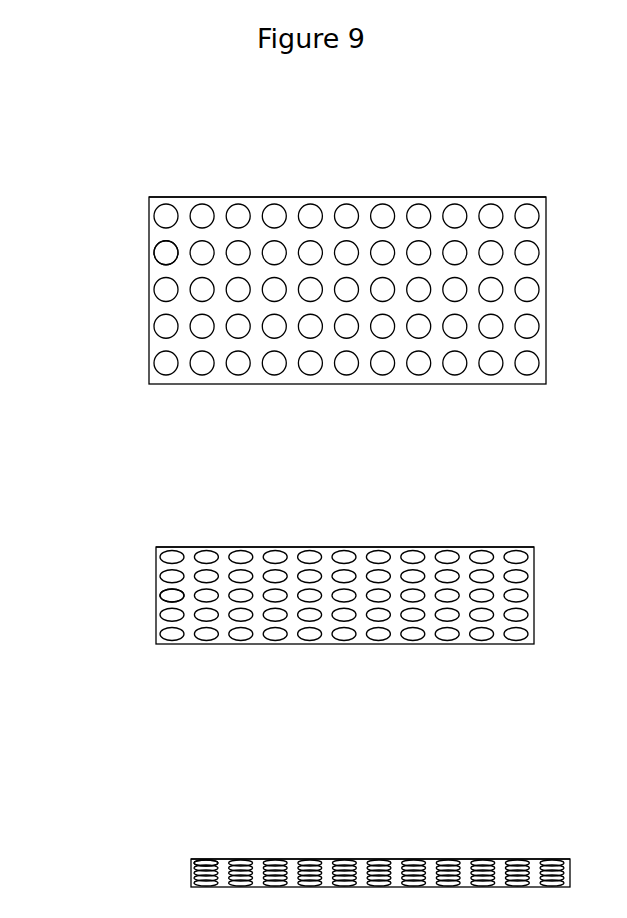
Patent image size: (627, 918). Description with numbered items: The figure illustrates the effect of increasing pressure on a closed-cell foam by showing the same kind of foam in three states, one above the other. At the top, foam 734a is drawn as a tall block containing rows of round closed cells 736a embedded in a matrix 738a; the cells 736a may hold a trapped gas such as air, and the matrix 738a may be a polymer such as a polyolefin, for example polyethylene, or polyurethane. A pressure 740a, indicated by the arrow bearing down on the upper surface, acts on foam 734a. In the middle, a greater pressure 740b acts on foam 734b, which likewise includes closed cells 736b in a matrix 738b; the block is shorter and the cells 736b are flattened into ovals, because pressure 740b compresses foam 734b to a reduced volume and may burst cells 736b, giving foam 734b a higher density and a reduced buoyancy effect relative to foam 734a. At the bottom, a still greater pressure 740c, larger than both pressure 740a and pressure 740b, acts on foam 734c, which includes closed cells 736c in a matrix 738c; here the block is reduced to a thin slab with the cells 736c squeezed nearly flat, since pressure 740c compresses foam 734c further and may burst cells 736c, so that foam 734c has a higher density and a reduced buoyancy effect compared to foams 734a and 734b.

The foam 734a is at (136, 280).
The closed cells 736a is at (165, 253).
The matrix 738a is at (184, 235).
The pressure 740a is at (330, 185).
The foam 734b is at (142, 627).
The closed cells 736b is at (172, 597).
The matrix 738b is at (186, 583).
The pressure 740b is at (334, 535).
The foam 734c is at (176, 889).
The closed cells 736c is at (195, 862).
The matrix 738c is at (226, 869).
The pressure 740c is at (369, 847).